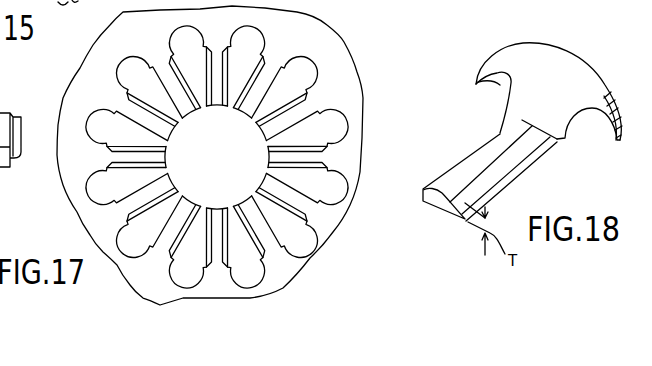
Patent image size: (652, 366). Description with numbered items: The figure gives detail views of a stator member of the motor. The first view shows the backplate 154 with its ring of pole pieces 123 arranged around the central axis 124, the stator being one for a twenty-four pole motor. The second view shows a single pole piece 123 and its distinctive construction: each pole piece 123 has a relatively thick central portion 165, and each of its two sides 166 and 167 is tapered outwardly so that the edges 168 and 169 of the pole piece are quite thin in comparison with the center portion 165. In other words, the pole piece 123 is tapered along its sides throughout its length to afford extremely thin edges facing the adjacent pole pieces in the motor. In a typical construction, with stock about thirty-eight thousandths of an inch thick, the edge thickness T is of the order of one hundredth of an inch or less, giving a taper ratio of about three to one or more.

In FIG. 17, the backplate 154 is at (340, 77).
In FIG. 18, the backplate 154 is at (538, 104).
In FIG. 17, the pole piece 123 is at (242, 109).
In FIG. 18, the pole piece 123 is at (472, 193).
In FIG. 17, the axis 124 is at (217, 157).
In FIG. 18, the central portion 165 is at (507, 148).
In FIG. 18, the side 166 is at (459, 167).
In FIG. 18, the side 167 is at (557, 153).
In FIG. 18, the edge 168 is at (421, 193).
In FIG. 18, the edge 169 is at (510, 186).